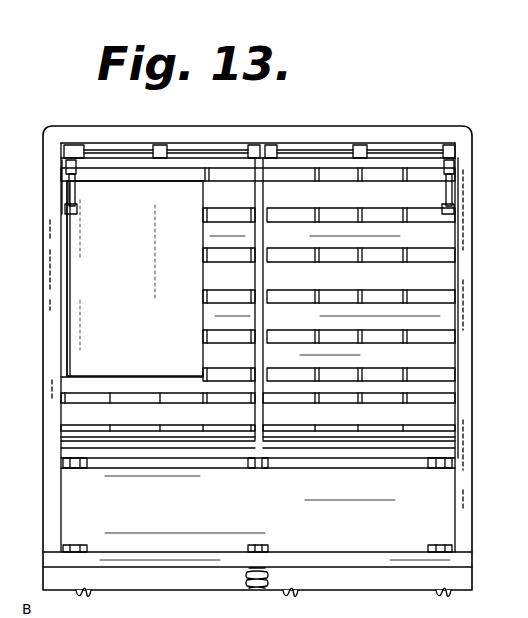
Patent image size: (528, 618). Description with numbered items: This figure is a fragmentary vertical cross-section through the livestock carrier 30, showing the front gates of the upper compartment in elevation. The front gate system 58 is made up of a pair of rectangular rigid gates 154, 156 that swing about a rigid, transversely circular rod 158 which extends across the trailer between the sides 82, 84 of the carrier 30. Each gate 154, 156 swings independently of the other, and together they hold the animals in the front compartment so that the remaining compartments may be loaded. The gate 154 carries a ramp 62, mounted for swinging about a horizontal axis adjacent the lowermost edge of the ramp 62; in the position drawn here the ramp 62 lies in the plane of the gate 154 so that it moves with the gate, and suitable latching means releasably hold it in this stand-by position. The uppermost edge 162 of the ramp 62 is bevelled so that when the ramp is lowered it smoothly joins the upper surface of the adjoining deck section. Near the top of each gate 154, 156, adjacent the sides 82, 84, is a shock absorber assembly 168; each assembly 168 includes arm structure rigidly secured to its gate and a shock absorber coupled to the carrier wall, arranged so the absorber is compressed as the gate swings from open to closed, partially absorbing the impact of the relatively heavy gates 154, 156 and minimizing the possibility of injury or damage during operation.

The livestock carrier 30 is at (470, 132).
The front gate system 58 is at (441, 278).
The ramp 62 is at (185, 351).
The side of carrier 82 is at (66, 249).
The side of carrier 84 is at (455, 235).
The gate 154 is at (161, 418).
The gate 156 is at (367, 418).
The transversely circular rod 158 is at (341, 152).
The uppermost edge of ramp 162 is at (183, 170).
The shock absorber assembly 168 is at (82, 197).